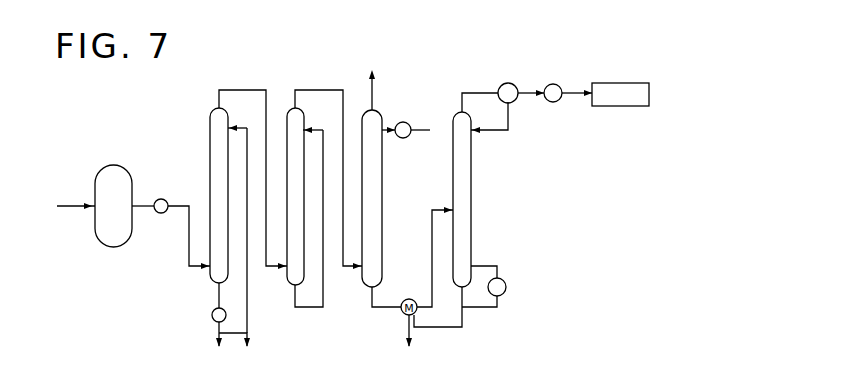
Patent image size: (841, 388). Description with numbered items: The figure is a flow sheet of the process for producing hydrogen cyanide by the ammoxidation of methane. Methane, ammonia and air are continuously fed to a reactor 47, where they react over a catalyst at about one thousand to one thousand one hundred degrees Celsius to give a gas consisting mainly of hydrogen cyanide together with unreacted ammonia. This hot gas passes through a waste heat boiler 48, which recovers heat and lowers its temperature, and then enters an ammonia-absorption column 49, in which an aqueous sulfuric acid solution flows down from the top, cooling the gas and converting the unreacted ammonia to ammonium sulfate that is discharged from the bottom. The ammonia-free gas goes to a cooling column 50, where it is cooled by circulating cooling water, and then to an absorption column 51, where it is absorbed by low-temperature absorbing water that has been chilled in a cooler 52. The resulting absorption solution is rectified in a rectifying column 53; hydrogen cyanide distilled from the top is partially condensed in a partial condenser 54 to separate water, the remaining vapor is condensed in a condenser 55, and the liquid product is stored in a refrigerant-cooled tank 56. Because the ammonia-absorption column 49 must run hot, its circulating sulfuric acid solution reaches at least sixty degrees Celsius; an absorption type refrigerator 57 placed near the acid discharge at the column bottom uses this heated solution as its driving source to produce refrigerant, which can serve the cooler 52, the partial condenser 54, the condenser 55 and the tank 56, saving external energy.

The reactor 47 is at (100, 187).
The waste heat boiler 48 is at (161, 199).
The ammonia-absorption column 49 is at (219, 110).
The cooling column 50 is at (296, 110).
The absorption column 51 is at (377, 136).
The cooler 52 is at (403, 122).
The rectifying column 53 is at (463, 152).
The partial condenser 54 is at (507, 83).
The condenser 55 is at (552, 84).
The tank 56 is at (610, 90).
The absorption type refrigerator 57 is at (212, 313).